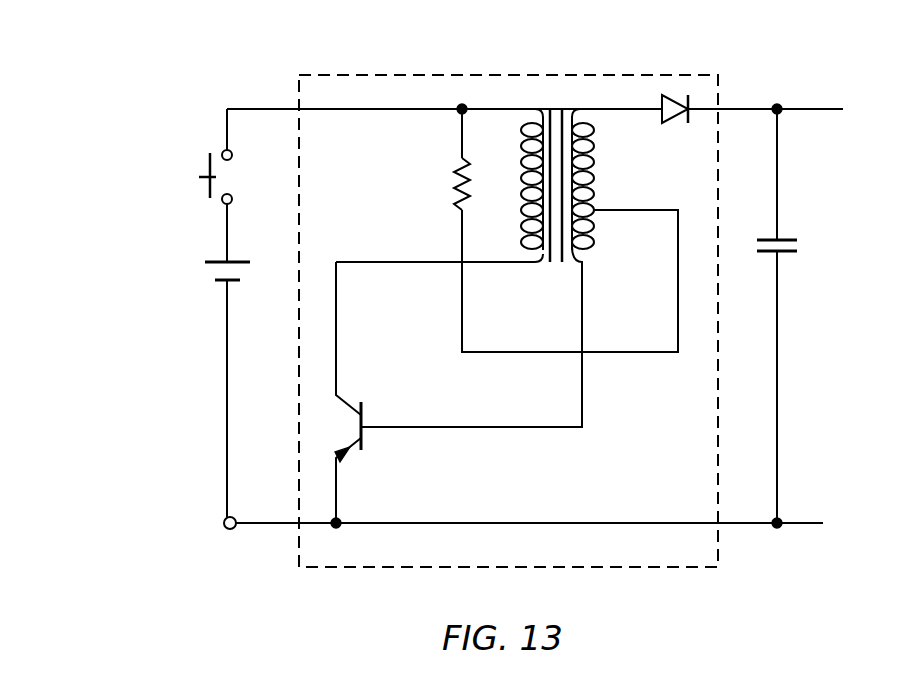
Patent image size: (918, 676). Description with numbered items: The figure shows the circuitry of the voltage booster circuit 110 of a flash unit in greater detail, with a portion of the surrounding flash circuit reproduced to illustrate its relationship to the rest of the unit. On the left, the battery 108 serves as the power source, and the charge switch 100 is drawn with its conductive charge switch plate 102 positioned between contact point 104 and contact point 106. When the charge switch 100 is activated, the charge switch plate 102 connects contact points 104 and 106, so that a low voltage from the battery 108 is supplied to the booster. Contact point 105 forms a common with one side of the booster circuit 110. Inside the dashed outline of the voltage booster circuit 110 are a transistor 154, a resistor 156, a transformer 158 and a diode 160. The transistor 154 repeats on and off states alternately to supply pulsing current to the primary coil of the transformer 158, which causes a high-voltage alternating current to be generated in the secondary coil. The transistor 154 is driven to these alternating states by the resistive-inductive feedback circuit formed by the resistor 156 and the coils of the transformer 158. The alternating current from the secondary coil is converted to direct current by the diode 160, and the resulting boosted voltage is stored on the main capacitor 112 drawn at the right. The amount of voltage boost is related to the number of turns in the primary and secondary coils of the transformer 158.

The charge switch 100 is at (198, 162).
The conductive charge switch plate 102 is at (208, 187).
The contact point 104 is at (232, 157).
The contact point 106 is at (232, 201).
The battery 108 is at (212, 272).
The contact point 105 is at (223, 534).
The voltage booster circuit 110 is at (333, 72).
The main capacitor 112 is at (785, 235).
The transistor 154 is at (362, 418).
The resistor 156 is at (453, 183).
The transformer 158 is at (553, 107).
The diode 160 is at (670, 127).